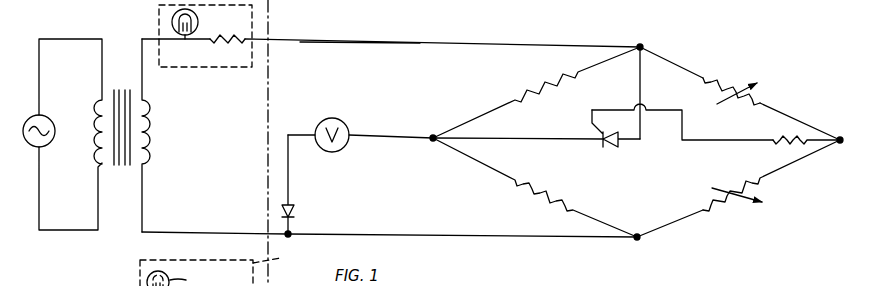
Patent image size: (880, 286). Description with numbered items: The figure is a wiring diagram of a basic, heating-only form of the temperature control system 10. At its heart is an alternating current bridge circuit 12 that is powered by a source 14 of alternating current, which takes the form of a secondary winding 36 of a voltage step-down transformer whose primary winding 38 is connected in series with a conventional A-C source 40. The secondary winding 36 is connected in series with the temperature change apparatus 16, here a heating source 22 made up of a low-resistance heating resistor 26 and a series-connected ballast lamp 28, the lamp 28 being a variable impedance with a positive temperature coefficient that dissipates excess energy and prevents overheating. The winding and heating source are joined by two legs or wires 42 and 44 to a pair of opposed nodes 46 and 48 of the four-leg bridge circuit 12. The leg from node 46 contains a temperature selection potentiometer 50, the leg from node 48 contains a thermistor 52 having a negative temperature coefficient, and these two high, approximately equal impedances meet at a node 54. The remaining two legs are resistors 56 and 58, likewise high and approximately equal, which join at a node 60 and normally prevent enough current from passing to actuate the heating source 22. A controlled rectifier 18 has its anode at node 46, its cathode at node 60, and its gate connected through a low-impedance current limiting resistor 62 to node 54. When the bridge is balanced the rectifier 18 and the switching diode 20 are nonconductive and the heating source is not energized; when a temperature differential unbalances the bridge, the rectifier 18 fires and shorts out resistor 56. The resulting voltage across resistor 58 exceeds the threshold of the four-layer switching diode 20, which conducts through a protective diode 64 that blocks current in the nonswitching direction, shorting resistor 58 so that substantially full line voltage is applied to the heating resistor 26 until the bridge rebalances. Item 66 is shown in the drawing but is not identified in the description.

The temperature control system 10 is at (491, 42).
The alternating current bridge circuit 12 is at (680, 62).
The source of alternating current 14 is at (121, 71).
The temperature change apparatus 16 is at (259, 28).
The controlled rectifier 18 is at (611, 148).
The switching diode 20 is at (345, 123).
The heating source 22 is at (252, 13).
The heating resistor 26 is at (233, 43).
The ballast lamp 28 is at (198, 22).
The secondary winding 36 is at (150, 101).
The primary winding 38 is at (97, 99).
The A-C source 40 is at (45, 148).
The wire 42 is at (340, 43).
The wire 44 is at (340, 234).
The node 46 is at (640, 47).
The node 48 is at (637, 237).
The temperature selection potentiometer 50 is at (735, 86).
The thermistor 52 is at (733, 205).
The node 54 is at (840, 140).
The resistor 56 is at (543, 84).
The resistor 58 is at (553, 203).
The node 60 is at (433, 140).
The current limiting resistor 62 is at (790, 144).
The diode 64 is at (296, 210).
The second lamp assembly 66 is at (487, 285).